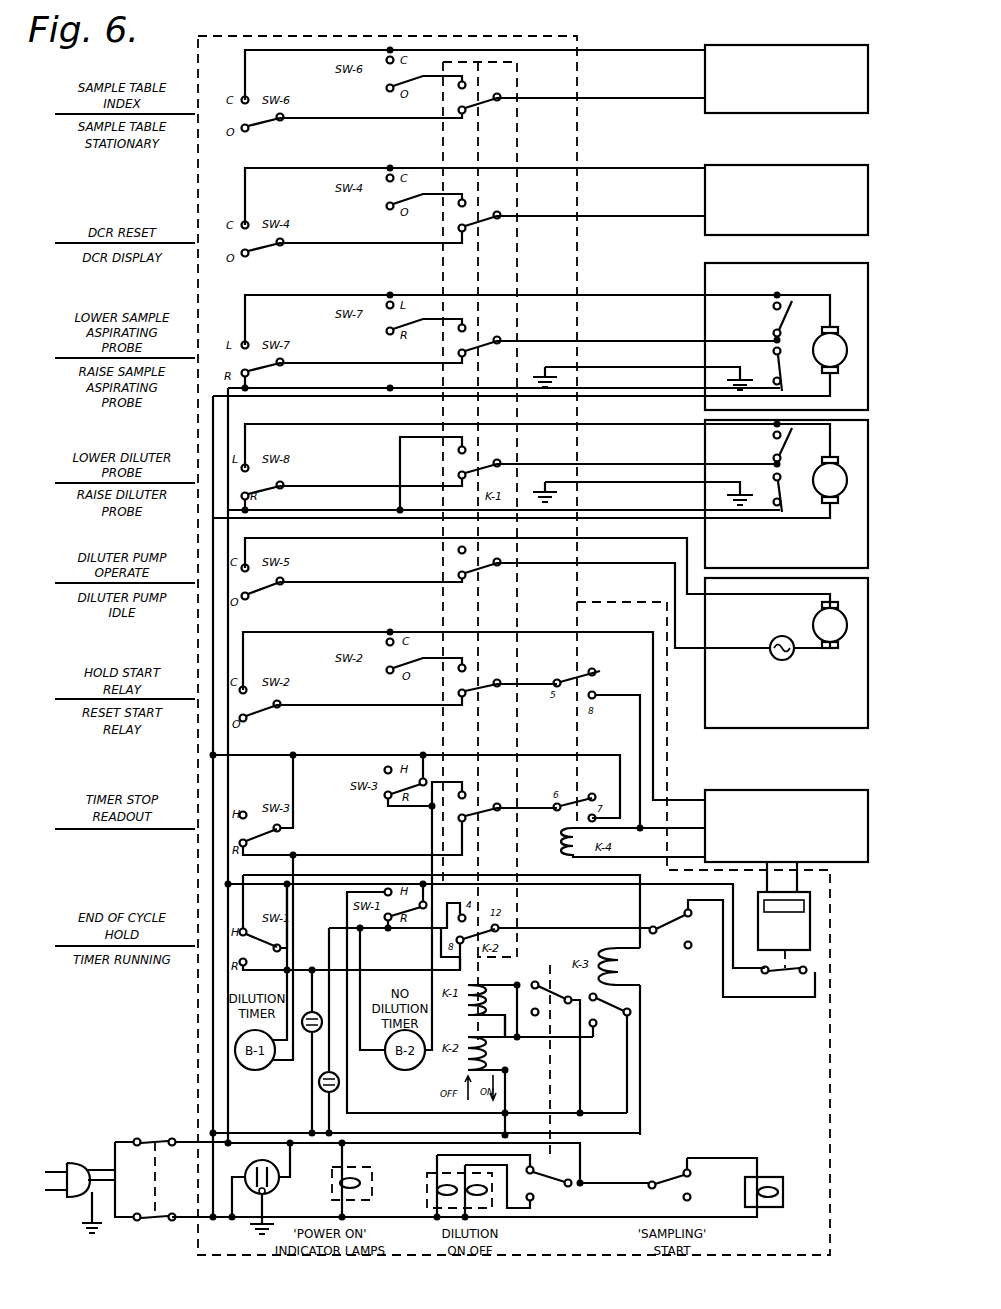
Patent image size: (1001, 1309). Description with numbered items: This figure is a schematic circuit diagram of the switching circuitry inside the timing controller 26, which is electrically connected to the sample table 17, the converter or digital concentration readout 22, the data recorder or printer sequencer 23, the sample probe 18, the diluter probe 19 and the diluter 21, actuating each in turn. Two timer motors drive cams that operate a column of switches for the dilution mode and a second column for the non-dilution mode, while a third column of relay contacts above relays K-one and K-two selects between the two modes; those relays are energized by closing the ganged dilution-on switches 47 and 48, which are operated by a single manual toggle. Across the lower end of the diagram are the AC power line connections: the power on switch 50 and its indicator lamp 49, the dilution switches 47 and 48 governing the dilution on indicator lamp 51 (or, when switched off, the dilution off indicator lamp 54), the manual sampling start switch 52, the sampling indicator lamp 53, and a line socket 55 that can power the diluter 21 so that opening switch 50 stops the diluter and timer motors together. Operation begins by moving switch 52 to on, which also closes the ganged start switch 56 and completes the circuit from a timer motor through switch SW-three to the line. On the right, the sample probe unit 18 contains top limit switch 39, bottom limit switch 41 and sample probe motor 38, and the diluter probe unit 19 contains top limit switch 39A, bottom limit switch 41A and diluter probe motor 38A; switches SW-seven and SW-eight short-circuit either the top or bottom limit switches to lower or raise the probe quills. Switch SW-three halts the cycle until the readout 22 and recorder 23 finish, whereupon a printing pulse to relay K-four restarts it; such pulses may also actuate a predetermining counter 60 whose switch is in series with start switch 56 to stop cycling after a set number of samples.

The timing controller unit 26 is at (570, 36).
The sample table 17 is at (705, 110).
The converter (digital concentration readout unit) 22 is at (705, 160).
The sample probe 18 is at (705, 265).
The top limit switch 39 is at (775, 313).
The bottom limit switch 41 is at (768, 368).
The sample probe motor 38 is at (815, 355).
The diluter probe 19 is at (705, 500).
The top limit switch 39A is at (775, 440).
The bottom limit switch 41A is at (818, 490).
The diluter probe motor 38A is at (822, 465).
The diluter 21 is at (705, 690).
The data recorder (printer sequencer) 23 is at (727, 790).
The predetermining counter 60 is at (810, 930).
The start switch 56 is at (687, 968).
The dilution-on switch 48 is at (556, 990).
The power on switch 50 is at (163, 1140).
The line socket 55 is at (280, 1180).
The indicator lamp 49 is at (372, 1180).
The dilution on indicator lamp 51 is at (427, 1197).
The dilution off indicator lamp 54 is at (480, 1197).
The sampling switch 52 is at (675, 1148).
The dilution-on switch 47 is at (545, 1185).
The sampling indicator lamp 53 is at (783, 1180).